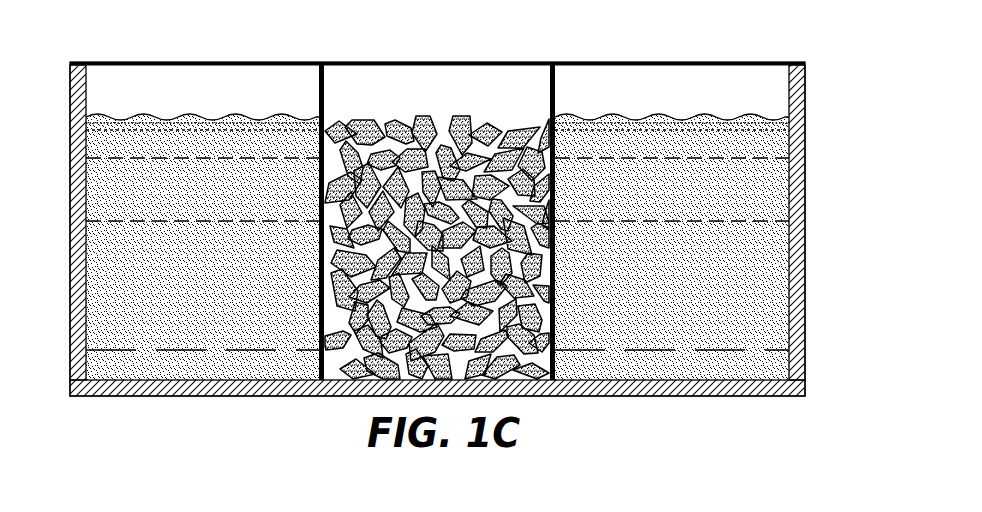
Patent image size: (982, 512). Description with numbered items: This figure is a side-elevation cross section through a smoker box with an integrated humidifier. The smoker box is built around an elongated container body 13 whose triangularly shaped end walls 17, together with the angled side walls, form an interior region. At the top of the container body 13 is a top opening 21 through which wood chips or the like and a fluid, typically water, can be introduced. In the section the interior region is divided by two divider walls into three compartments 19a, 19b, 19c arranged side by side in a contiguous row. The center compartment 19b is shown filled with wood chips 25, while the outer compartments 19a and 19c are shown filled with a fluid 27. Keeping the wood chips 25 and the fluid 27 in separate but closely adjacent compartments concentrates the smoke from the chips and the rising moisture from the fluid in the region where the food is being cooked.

The container body 13 is at (173, 385).
The end walls 17 is at (72, 280).
The top opening 21 is at (535, 63).
The compartment 19a is at (223, 75).
The center compartment 19b is at (453, 226).
The compartment 19c is at (703, 201).
The wood chips 25 is at (530, 388).
The fluid 27 is at (777, 293).